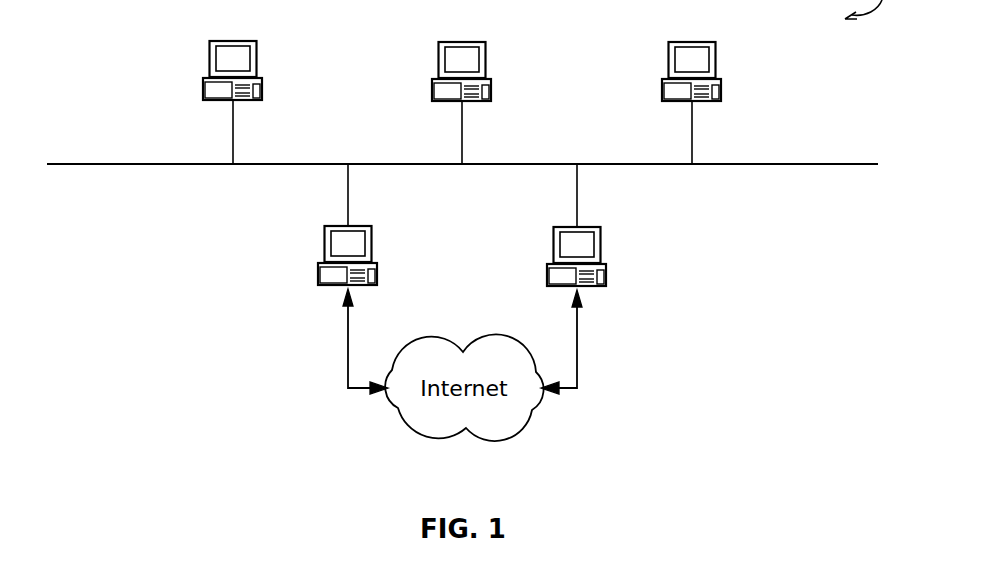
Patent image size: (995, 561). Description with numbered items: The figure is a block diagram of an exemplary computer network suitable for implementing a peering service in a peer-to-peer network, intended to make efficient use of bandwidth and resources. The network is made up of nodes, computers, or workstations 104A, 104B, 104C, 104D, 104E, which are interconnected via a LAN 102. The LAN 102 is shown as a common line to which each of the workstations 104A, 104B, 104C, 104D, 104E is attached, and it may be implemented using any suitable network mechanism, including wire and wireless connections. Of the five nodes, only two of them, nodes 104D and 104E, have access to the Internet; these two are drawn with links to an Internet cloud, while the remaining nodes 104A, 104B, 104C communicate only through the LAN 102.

The LAN 102 is at (117, 165).
The node 104A is at (258, 60).
The node 104B is at (490, 58).
The node 104C is at (718, 60).
The node 104D is at (373, 245).
The node 104E is at (602, 248).